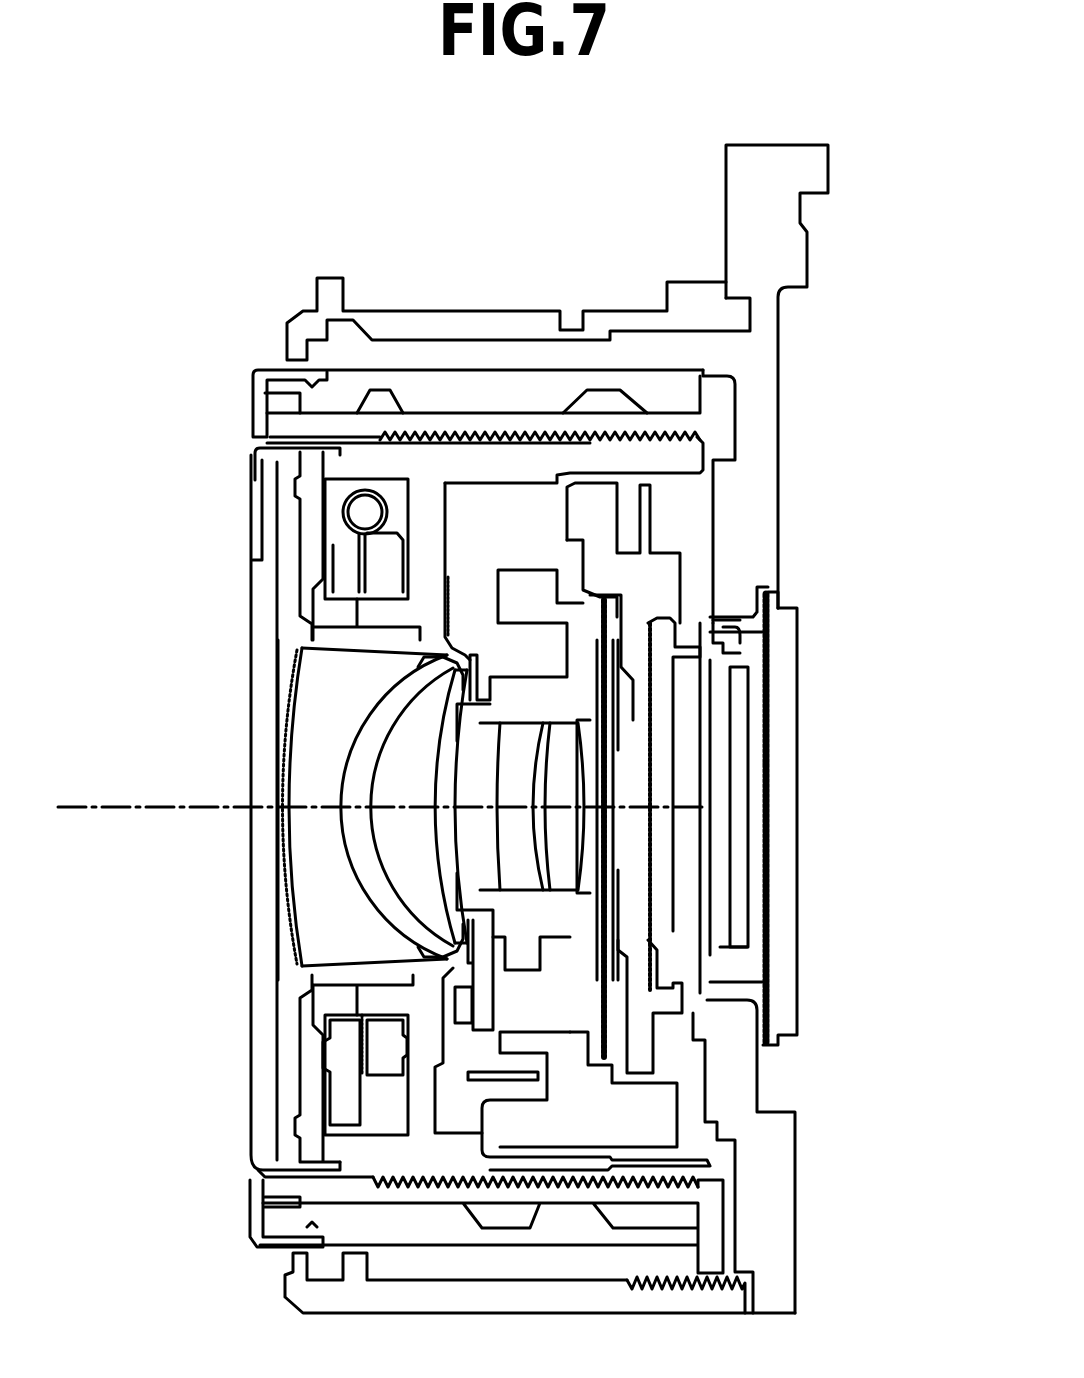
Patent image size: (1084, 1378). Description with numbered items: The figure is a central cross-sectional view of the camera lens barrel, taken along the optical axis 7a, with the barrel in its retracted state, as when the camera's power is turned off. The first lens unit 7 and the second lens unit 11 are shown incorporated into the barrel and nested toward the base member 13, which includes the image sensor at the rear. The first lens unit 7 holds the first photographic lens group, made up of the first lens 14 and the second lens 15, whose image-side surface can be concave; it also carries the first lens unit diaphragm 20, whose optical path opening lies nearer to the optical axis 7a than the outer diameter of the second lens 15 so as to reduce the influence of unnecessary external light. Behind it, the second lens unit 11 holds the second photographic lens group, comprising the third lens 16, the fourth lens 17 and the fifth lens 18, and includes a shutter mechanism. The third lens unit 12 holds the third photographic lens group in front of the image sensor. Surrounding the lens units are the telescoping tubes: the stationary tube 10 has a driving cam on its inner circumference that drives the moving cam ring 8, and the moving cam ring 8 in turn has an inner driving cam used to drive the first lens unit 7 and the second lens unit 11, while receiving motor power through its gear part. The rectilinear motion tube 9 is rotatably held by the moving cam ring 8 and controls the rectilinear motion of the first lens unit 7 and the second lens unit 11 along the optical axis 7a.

The first lens unit 7 is at (350, 464).
The optical axis 7a is at (100, 810).
The moving cam ring 8 is at (535, 380).
The rectilinear motion tube 9 is at (343, 420).
The stationary tube 10 is at (440, 327).
The second lens unit 11 is at (530, 597).
The third lens unit 12 is at (662, 610).
The base member 13 is at (770, 1212).
The first lens 14 is at (327, 735).
The second lens 15 is at (397, 773).
The third lens 16 is at (470, 830).
The fourth lens 17 is at (513, 850).
The fifth lens 18 is at (565, 868).
The first lens unit diaphragm 20 is at (440, 655).